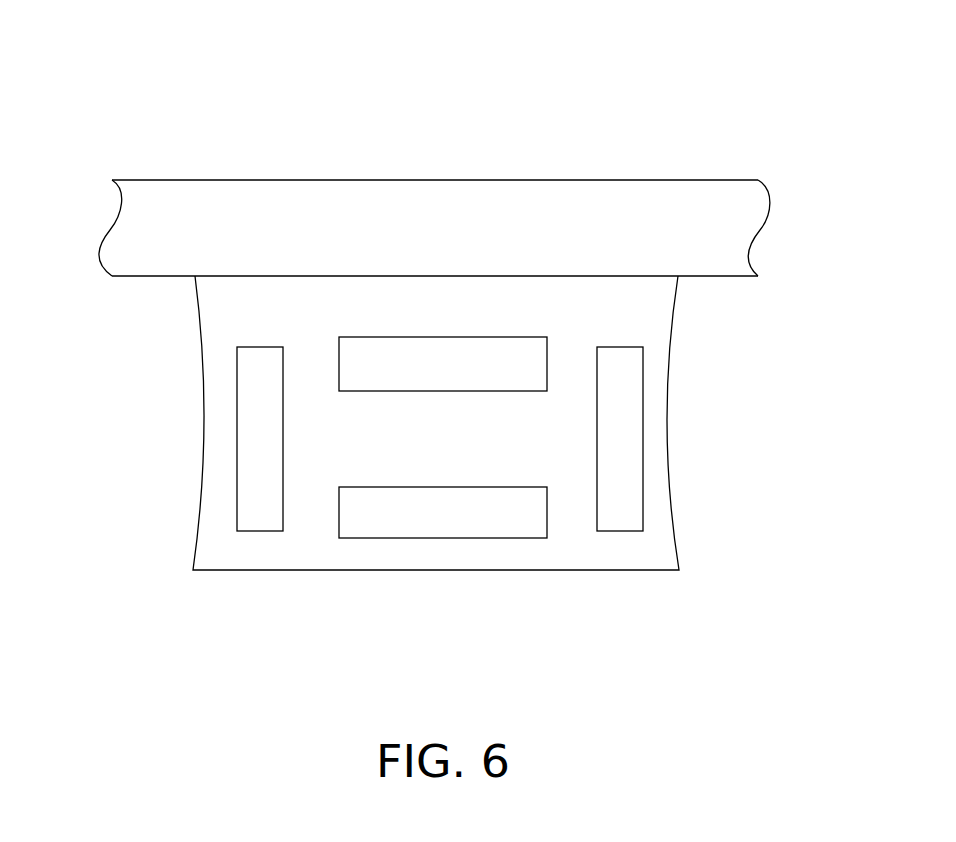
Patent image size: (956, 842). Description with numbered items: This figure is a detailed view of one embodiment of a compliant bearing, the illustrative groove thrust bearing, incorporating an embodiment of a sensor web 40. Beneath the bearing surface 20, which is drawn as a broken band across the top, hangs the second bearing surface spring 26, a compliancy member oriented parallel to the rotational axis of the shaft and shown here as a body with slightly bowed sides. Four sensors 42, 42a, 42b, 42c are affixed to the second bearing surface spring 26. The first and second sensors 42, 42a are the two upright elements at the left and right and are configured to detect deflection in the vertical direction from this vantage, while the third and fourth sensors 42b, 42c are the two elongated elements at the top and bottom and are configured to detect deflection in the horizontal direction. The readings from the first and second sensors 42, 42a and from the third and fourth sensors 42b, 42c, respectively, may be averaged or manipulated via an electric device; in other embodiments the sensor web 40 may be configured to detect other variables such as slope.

The bearing surface 20 is at (465, 180).
The second bearing surface spring 26 is at (445, 448).
The sensor web 40 is at (436, 513).
The first sensor 42 is at (250, 425).
The second sensor 42a is at (628, 452).
The third sensor 42b is at (367, 355).
The fourth sensor 42c is at (419, 522).